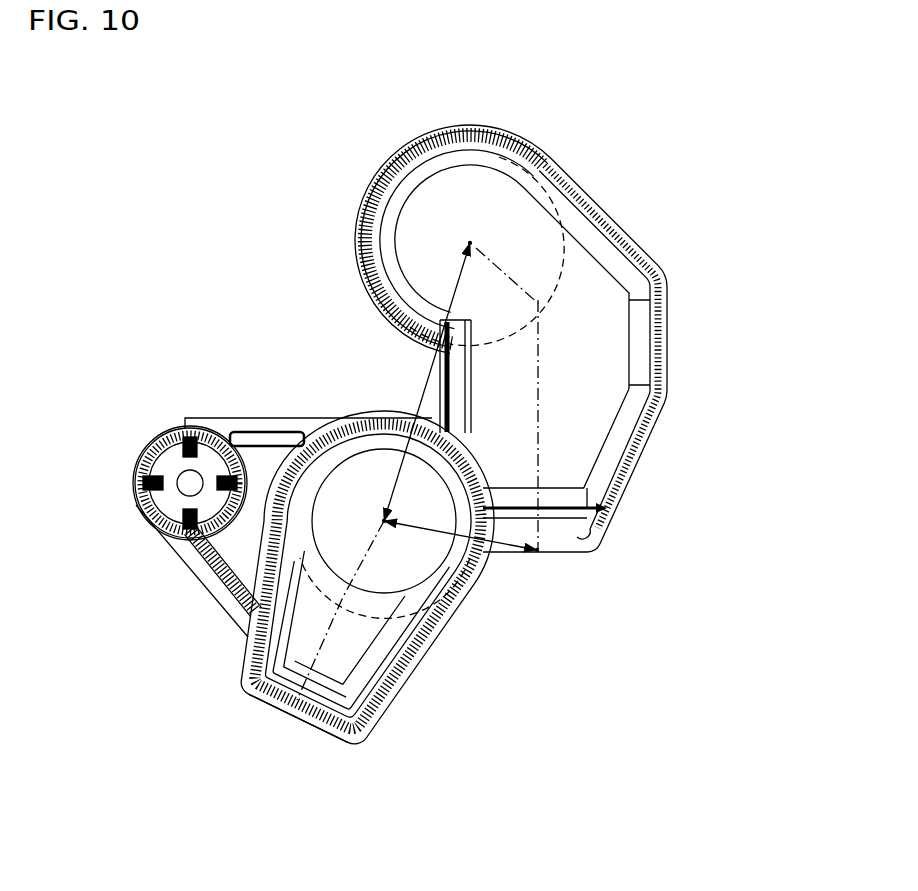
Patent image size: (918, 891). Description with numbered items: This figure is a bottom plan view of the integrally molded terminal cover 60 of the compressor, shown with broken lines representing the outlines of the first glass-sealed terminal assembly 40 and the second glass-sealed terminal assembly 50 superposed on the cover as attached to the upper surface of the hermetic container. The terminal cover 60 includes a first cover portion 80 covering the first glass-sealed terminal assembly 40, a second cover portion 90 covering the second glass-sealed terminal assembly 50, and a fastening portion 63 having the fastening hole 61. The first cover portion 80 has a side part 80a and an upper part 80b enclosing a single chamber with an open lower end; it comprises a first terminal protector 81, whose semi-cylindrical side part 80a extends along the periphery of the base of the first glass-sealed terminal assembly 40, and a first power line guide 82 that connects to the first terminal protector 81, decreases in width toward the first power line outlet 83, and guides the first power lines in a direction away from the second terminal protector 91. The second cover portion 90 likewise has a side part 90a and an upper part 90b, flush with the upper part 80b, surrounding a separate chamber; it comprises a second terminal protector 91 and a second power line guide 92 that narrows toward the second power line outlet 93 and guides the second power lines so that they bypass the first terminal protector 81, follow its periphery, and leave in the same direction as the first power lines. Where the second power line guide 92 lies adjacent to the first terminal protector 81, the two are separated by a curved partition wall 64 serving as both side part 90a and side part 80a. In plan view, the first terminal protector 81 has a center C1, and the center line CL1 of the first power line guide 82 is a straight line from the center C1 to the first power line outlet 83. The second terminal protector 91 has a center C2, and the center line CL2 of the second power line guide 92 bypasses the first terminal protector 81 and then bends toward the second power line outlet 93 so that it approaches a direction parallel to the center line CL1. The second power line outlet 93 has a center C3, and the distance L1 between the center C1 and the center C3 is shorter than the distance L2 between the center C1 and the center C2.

The first glass-sealed terminal assembly 40 is at (353, 648).
The second glass-sealed terminal assembly 50 is at (560, 270).
The terminal cover 60 is at (244, 192).
The fastening hole 61 is at (186, 470).
The fastening portion 63 is at (243, 428).
The curved partition wall 64 is at (483, 468).
The first cover portion 80 is at (463, 617).
The side part 80a is at (396, 410).
The upper part 80b is at (364, 468).
The first terminal protector 81 is at (476, 590).
The first power line guide 82 is at (372, 672).
The first power line outlet 83 is at (310, 730).
The second cover portion 90 is at (616, 180).
The side part 90a is at (417, 142).
The upper part 90b is at (466, 175).
The second terminal protector 91 is at (500, 195).
The second power line guide 92 is at (605, 328).
The second power line outlet 93 is at (552, 556).
The center of first terminal protector C1 is at (367, 517).
The center of second terminal protector C2 is at (465, 229).
The center of second power line outlet C3 is at (545, 560).
The distance between center C1 and center C3 L1 is at (460, 528).
The distance between center C1 and center C2 L2 is at (427, 382).
The center line of first power line guide CL1 is at (297, 700).
The center line of second power line guide CL2 is at (543, 450).